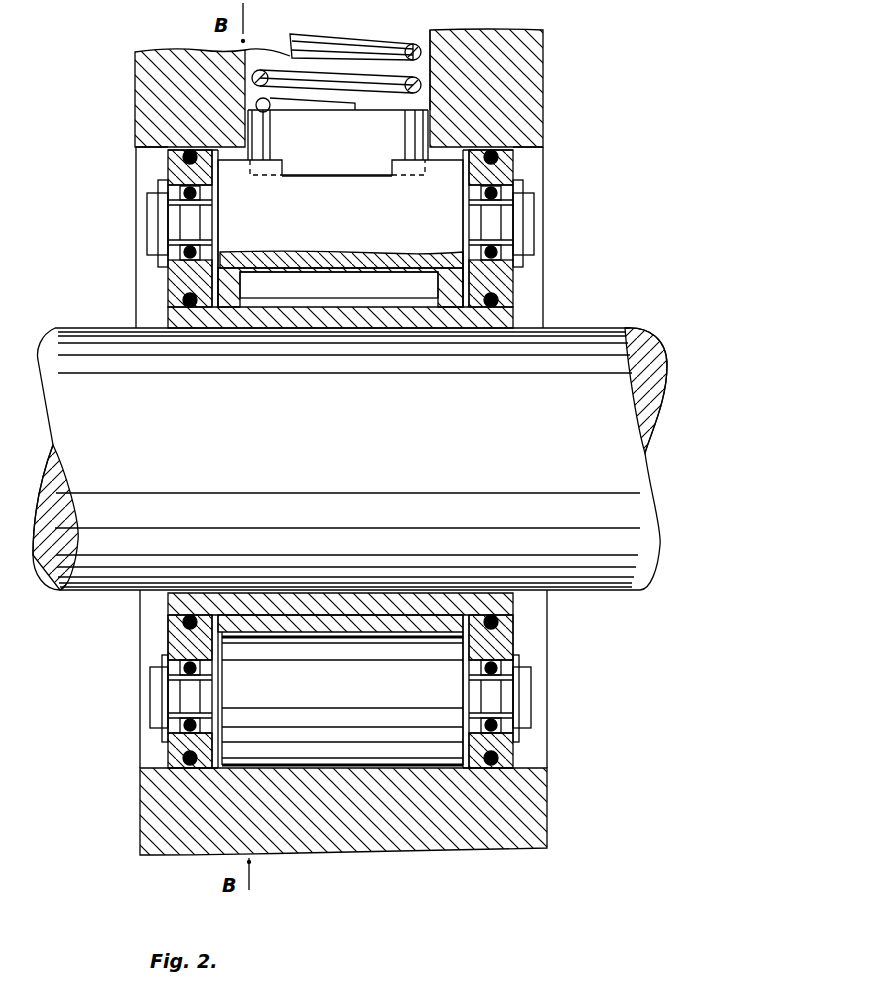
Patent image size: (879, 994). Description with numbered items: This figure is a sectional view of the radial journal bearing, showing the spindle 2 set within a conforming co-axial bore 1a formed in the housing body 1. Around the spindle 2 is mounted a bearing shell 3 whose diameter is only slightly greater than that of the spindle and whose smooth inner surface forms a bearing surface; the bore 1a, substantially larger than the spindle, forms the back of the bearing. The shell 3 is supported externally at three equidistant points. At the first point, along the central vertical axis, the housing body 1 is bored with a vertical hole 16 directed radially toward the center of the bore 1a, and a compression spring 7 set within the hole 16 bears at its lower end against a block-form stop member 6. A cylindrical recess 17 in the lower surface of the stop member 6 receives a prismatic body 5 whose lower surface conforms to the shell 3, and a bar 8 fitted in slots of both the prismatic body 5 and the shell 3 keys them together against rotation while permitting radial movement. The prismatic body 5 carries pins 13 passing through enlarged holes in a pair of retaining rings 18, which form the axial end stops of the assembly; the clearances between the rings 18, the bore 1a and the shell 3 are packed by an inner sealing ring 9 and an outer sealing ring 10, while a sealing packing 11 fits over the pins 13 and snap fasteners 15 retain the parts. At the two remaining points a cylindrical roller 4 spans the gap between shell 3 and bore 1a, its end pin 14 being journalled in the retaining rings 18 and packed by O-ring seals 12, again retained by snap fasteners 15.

The housing body 1 is at (543, 50).
The co-axial bore 1a is at (530, 151).
The spindle 2 is at (592, 338).
The bearing shell 3 is at (508, 315).
The cylindrical roller 4 is at (445, 767).
The prismatic body 5 is at (446, 227).
The stop member 6 is at (270, 172).
The compression spring 7 is at (337, 44).
The bar 8 is at (422, 280).
The inner sealing ring 9 is at (180, 300).
The outer sealing ring 10 is at (180, 156).
The sealing packing 11 is at (178, 180).
The O-ring seals 12 is at (170, 656).
The pins 13 is at (203, 214).
The pin 14 is at (192, 697).
The snap fasteners 15 is at (152, 193).
The vertical hole 16 is at (430, 31).
The cylindrical recess 17 is at (303, 177).
The retaining rings 18 is at (172, 275).